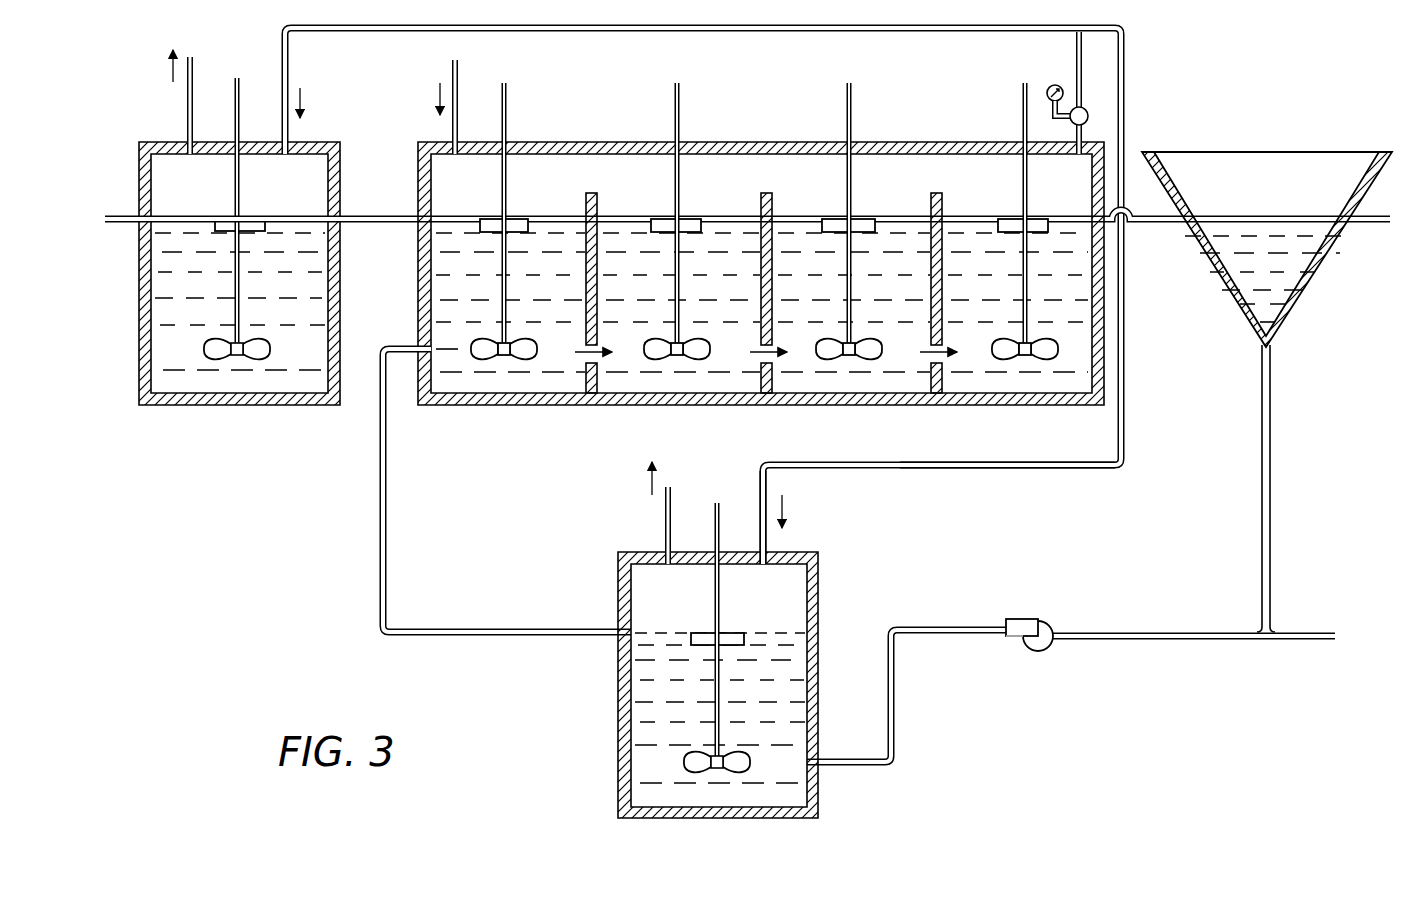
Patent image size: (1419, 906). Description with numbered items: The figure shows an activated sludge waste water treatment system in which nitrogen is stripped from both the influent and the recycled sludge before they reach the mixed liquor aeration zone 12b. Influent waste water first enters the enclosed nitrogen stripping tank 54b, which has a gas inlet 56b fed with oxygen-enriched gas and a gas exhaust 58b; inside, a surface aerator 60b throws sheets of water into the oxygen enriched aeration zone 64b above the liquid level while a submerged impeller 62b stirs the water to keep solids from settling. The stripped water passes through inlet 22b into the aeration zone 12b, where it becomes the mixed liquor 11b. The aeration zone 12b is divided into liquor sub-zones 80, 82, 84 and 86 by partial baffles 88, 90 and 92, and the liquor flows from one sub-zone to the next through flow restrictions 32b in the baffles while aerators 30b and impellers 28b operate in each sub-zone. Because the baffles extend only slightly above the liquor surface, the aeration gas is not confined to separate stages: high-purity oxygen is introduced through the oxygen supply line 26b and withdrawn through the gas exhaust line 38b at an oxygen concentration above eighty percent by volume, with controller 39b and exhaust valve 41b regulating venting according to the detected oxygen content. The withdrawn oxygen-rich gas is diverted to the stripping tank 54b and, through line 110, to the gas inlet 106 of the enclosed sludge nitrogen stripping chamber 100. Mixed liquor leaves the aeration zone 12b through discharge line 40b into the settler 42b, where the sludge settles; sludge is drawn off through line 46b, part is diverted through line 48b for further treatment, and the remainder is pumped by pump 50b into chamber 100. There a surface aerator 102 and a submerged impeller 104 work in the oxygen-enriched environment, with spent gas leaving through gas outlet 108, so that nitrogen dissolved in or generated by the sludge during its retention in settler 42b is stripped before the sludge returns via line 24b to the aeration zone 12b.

The mixed liquor 11b is at (556, 297).
The mixed liquor aeration zone 12b is at (775, 122).
The inlet 22b is at (373, 226).
The recirculated sludge inlet line 24b is at (379, 545).
The oxygen supply line 26b is at (458, 74).
The impellers 28b is at (494, 352).
The aerators 30b is at (514, 224).
The flow restrictions 32b is at (586, 356).
The gas exhaust line 38b is at (1077, 144).
The controller 39b is at (1052, 84).
The discharge line 40b is at (1169, 224).
The exhaust valve 41b is at (1090, 114).
The settler 42b is at (1316, 288).
The sludge line 46b is at (1262, 527).
The sludge diversion line 48b is at (1332, 602).
The pump 50b is at (1034, 620).
The nitrogen stripping tank 54b is at (140, 324).
The gas inlet 56b is at (289, 134).
The gas exhaust 58b is at (186, 105).
The surface aerator 60b is at (241, 222).
The submerged impeller 62b is at (214, 348).
The oxygen enriched aeration zone 64b is at (208, 190).
The liquor sub-zone 80 is at (472, 297).
The liquor sub-zone 82 is at (640, 297).
The liquor sub-zone 84 is at (815, 297).
The liquor sub-zone 86 is at (990, 297).
The partial baffle 88 is at (590, 318).
The partial baffle 90 is at (762, 300).
The partial baffle 92 is at (933, 303).
The sludge nitrogen stripping chamber 100 is at (620, 733).
The surface aerator 102 is at (722, 634).
The submerged impeller 104 is at (693, 762).
The gas inlet 106 is at (771, 548).
The gas outlet 108 is at (665, 523).
The line 110 is at (973, 470).